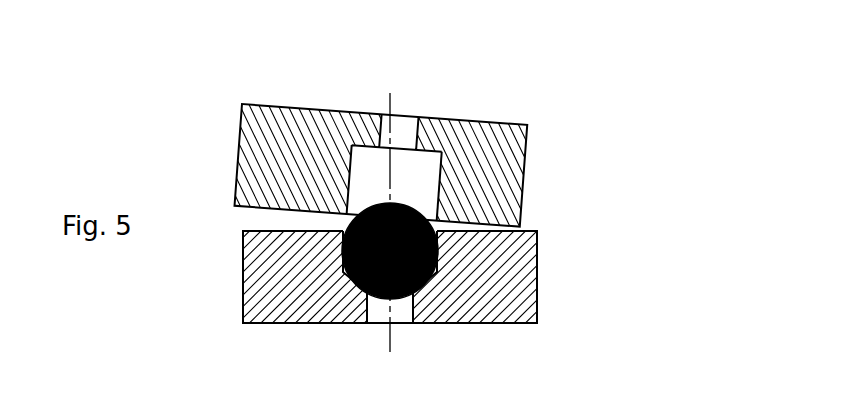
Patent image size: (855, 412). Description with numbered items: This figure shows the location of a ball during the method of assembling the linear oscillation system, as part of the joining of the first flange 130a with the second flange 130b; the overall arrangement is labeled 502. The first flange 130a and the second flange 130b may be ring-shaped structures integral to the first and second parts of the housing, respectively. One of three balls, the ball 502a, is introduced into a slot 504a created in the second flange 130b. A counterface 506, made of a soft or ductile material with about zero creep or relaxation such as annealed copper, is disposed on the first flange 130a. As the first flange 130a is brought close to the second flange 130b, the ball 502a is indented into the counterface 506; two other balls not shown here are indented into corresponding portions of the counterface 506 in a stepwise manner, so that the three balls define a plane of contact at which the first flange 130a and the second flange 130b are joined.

The ball seat assembly 502 is at (587, 60).
The ball 502a is at (417, 210).
The slot 504a is at (429, 286).
The counterface 506 is at (367, 166).
The first flange 130a is at (525, 160).
The second flange 130b is at (540, 281).